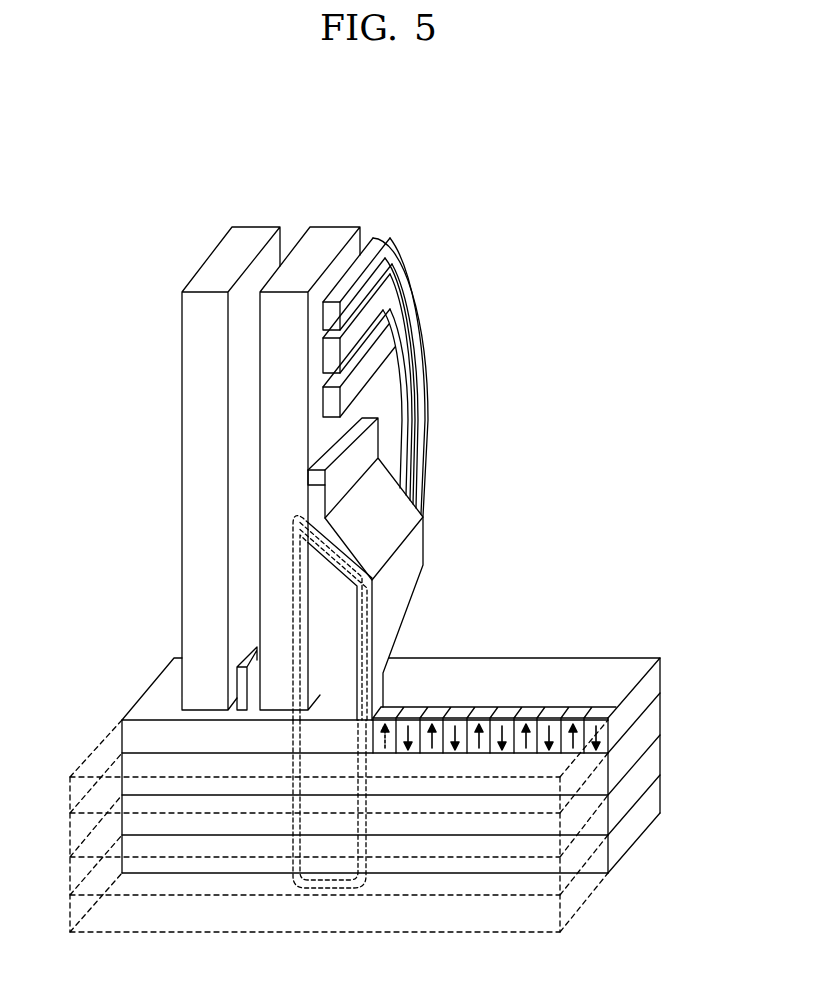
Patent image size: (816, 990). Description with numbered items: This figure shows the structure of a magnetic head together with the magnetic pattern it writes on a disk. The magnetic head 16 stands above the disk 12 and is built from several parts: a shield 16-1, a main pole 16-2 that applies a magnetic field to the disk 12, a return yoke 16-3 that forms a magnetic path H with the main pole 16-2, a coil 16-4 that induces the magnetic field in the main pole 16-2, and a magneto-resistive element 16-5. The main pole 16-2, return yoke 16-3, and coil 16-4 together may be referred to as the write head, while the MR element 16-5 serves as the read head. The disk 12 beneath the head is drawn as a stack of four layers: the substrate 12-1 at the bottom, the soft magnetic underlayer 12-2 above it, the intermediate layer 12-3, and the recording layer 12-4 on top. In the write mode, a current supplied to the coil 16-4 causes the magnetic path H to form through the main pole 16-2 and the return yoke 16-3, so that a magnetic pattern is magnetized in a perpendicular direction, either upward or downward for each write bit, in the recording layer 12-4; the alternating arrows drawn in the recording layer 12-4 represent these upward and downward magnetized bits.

The disk 12 is at (399, 755).
The substrate 12-1 is at (653, 797).
The soft magnetic underlayer 12-2 is at (652, 757).
The intermediate layer 12-3 is at (650, 724).
The recording layer 12-4 is at (656, 683).
The magnetic head 16 is at (400, 559).
The shield 16-1 is at (246, 240).
The main pole 16-2 is at (330, 238).
The return yoke 16-3 is at (412, 550).
The coil 16-4 is at (436, 389).
The magneto-resistive (MR) element 16-5 is at (261, 640).
The magnetic path H is at (372, 623).